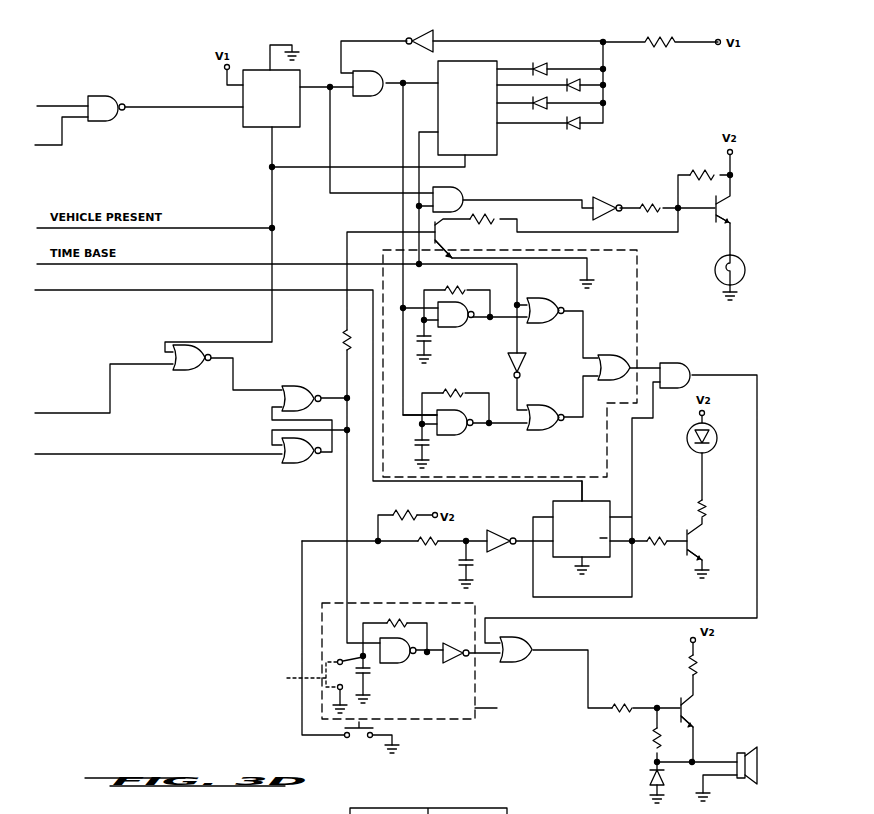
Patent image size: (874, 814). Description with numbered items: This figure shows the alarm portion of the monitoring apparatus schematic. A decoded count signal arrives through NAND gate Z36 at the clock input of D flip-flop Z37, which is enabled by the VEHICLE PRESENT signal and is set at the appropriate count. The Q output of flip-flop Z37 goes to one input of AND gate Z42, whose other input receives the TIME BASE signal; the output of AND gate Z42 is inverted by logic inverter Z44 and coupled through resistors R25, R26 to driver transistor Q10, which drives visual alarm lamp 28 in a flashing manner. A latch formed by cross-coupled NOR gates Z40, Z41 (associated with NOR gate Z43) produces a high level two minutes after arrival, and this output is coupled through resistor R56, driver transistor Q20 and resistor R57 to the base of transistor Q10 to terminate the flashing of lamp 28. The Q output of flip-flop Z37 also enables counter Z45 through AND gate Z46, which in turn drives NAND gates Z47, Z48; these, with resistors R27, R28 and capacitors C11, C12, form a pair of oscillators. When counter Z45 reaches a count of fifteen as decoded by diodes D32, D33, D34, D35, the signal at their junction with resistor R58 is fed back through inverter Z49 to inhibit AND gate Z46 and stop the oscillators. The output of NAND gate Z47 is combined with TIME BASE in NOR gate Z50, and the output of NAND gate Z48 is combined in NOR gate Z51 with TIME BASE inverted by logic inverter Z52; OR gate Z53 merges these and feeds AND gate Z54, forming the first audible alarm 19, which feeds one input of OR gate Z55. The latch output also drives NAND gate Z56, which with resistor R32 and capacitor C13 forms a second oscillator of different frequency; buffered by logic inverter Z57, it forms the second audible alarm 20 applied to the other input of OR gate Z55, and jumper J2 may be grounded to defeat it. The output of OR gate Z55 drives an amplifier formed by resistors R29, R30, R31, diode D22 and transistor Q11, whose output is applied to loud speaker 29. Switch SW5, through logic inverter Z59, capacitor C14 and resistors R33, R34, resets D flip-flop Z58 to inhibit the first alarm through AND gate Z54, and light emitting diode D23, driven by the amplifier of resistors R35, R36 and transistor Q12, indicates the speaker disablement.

The NAND gate Z36 is at (105, 99).
The D flip-flop Z37 is at (271, 99).
The NOR gate Z40 is at (301, 391).
The NOR gate Z41 is at (301, 460).
The AND gate Z42 is at (448, 193).
The NOR gate Z43 is at (192, 367).
The logic inverter Z44 is at (607, 201).
The counter Z45 is at (467, 108).
The AND gate Z46 is at (367, 76).
The NAND gate Z47 is at (467, 318).
The NAND gate Z48 is at (455, 416).
The inverter Z49 is at (419, 34).
The NOR gate Z50 is at (545, 304).
The NOR gate Z51 is at (545, 411).
The logic inverter Z52 is at (530, 365).
The OR gate Z53 is at (614, 360).
The AND gate Z54 is at (677, 368).
The OR gate Z55 is at (516, 659).
The NAND gate Z56 is at (401, 659).
The logic inverter Z57 is at (456, 647).
The D flip-flop Z58 is at (581, 530).
The logic inverter Z59 is at (501, 548).
The resistor R25 is at (652, 202).
The resistor R26 is at (702, 169).
The resistor R27 is at (457, 284).
The resistor R28 is at (455, 387).
The resistor R29 is at (622, 702).
The resistor R30 is at (639, 738).
The resistor R31 is at (706, 665).
The resistor R32 is at (397, 617).
The resistor R33 is at (404, 509).
The resistor R34 is at (430, 535).
The resistor R35 is at (657, 535).
The resistor R36 is at (715, 508).
The resistor R56 is at (325, 340).
The resistor R57 is at (483, 230).
The resistor R58 is at (660, 36).
The capacitor C11 is at (435, 345).
The capacitor C12 is at (434, 447).
The capacitor C13 is at (375, 679).
The capacitor C14 is at (453, 565).
The diode D22 is at (637, 779).
The light emitting diode D23 is at (688, 438).
The diode D32 is at (539, 61).
The diode D33 is at (566, 92).
The diode D34 is at (527, 110).
The diode D35 is at (572, 136).
The driver transistor Q10 is at (739, 209).
The transistor Q11 is at (702, 712).
The transistor Q12 is at (708, 545).
The driver transistor Q20 is at (449, 240).
The switch SW5 is at (354, 744).
The jumper J2 is at (300, 675).
The first audible alarm 19 is at (637, 303).
The second audible alarm 20 is at (418, 661).
The visual alarm lamp 28 is at (744, 270).
The loud speaker 29 is at (758, 745).